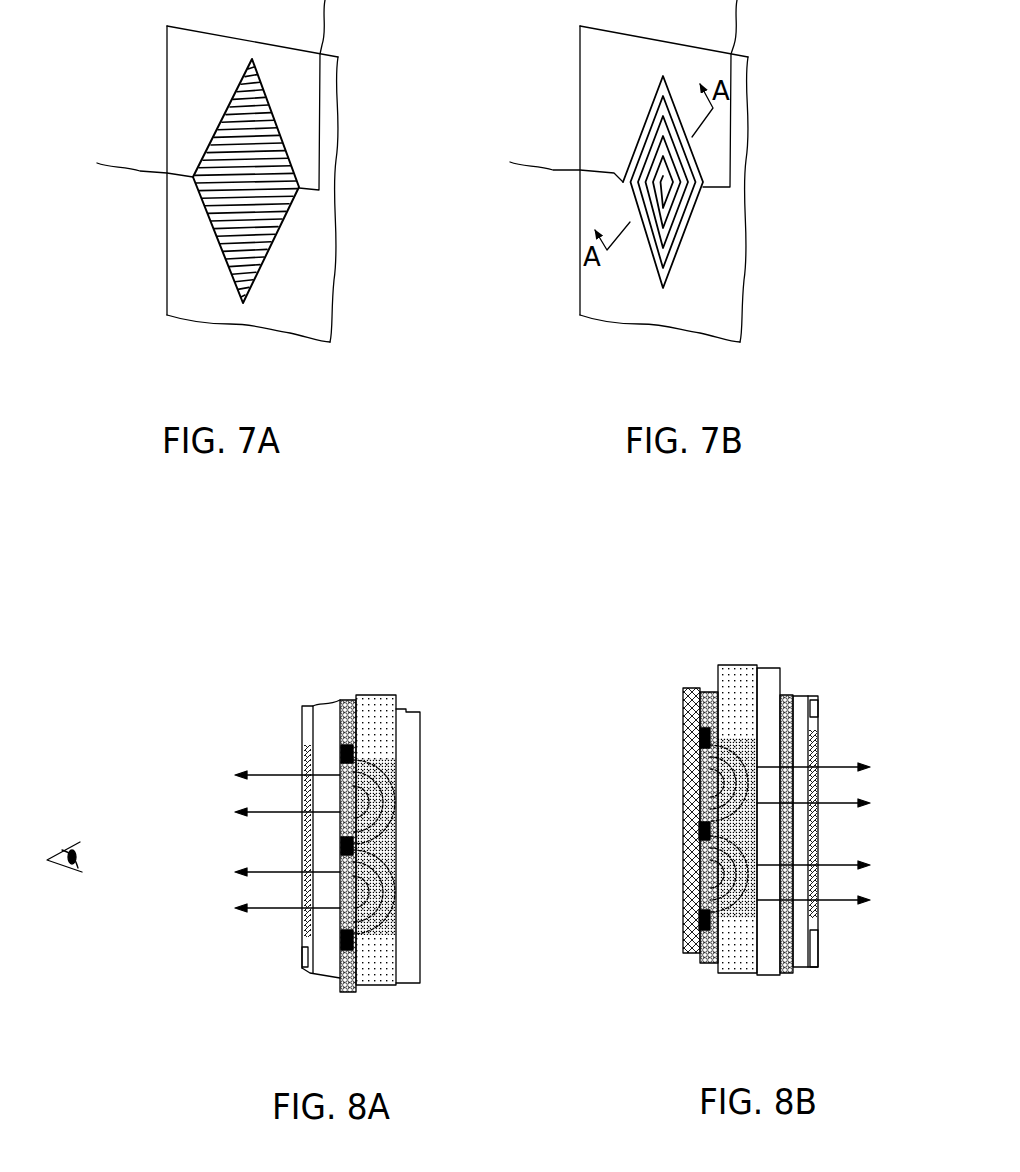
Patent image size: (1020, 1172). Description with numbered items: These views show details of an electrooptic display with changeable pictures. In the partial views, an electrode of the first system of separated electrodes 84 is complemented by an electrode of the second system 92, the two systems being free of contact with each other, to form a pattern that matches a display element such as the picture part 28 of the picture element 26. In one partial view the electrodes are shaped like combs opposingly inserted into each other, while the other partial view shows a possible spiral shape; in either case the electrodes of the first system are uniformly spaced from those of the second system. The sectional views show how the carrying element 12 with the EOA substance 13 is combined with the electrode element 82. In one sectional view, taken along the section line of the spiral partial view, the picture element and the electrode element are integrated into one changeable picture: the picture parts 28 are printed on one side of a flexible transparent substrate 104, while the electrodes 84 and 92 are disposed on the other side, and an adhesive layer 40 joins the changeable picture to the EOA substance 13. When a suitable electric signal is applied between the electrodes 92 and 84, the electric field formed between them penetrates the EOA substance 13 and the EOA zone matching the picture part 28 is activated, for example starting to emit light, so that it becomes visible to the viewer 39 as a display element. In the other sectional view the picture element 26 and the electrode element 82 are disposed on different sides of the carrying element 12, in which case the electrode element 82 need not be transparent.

In FIG. 8A, the carrying element 12 is at (408, 688).
In FIG. 8B, the carrying element 12 is at (765, 668).
In FIG. 8A, the EOA substance 13 is at (373, 703).
In FIG. 8B, the EOA substance 13 is at (735, 665).
In FIG. 8B, the flexible patterned picture element 26 is at (805, 696).
In FIG. 8A, the picture part 28 is at (300, 750).
In FIG. 8B, the picture part 28 is at (817, 825).
In FIG. 8A, the viewer 39 is at (62, 872).
In FIG. 8A, the adhesive layer 40 is at (340, 700).
In FIG. 8B, the adhesive layer 40 is at (708, 963).
In FIG. 8B, the front electrode element 82 is at (692, 953).
In FIG. 7A, the electrode of the first system 84 is at (281, 127).
In FIG. 7B, the electrode of the first system 84 is at (730, 197).
In FIG. 8A, the electrode of the first system 84 is at (340, 847).
In FIG. 8B, the electrode of the first system 84 is at (698, 830).
In FIG. 7A, the electrode of the second system 92 is at (222, 114).
In FIG. 7B, the electrode of the second system 92 is at (613, 172).
In FIG. 8A, the electrode of the second system 92 is at (340, 748).
In FIG. 8B, the electrode of the second system 92 is at (700, 738).
In FIG. 8A, the flexible transparent substrate 104 is at (318, 965).